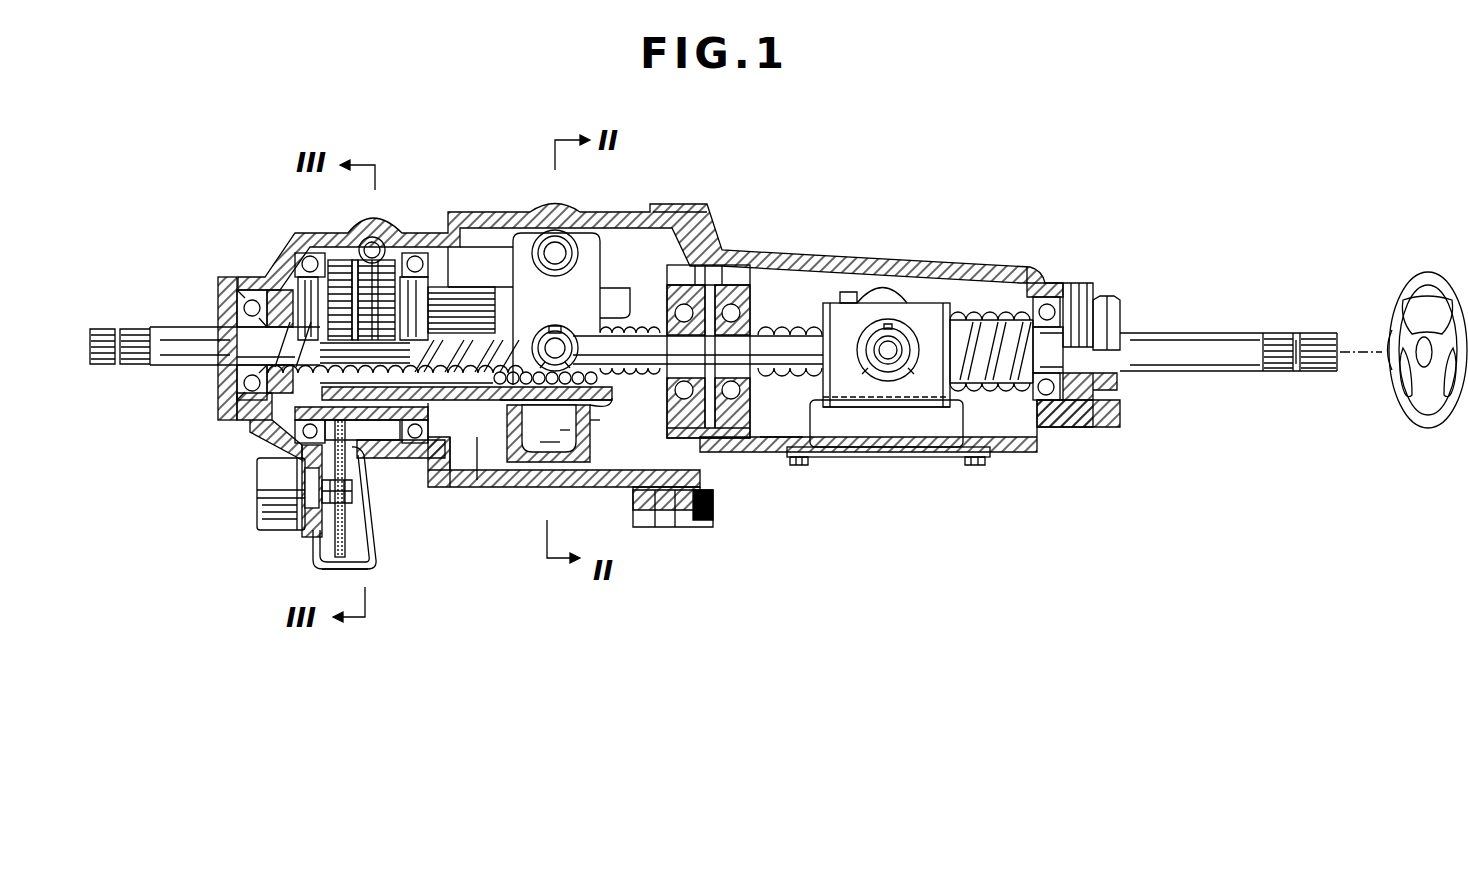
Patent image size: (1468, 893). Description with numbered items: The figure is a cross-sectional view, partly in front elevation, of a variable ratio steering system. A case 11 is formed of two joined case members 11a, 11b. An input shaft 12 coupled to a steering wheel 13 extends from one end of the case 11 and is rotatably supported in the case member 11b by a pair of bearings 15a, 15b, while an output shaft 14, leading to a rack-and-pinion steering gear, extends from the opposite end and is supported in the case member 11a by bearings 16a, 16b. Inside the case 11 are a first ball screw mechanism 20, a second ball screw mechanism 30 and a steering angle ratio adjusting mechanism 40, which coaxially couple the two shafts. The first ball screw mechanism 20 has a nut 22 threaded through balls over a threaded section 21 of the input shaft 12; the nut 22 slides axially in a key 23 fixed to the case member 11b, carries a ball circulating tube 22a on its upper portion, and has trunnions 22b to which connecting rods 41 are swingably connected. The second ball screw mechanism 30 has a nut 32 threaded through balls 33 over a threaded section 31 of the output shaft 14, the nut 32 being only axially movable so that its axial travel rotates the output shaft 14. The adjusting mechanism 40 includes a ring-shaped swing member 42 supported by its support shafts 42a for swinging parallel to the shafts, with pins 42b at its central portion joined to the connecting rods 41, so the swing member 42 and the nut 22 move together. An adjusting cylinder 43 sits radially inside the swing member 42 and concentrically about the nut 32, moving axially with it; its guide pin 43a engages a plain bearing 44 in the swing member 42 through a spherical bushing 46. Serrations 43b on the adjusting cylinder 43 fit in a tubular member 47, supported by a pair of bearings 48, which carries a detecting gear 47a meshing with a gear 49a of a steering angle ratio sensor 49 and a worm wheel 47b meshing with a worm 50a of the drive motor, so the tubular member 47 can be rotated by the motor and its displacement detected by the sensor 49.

The case 11 is at (703, 230).
The case member 11a is at (652, 204).
The case member 11b is at (1037, 277).
The input shaft 12 is at (1223, 333).
The steering wheel 13 is at (1415, 287).
The output shaft 14 is at (172, 333).
The bearing 15a is at (760, 455).
The bearing 15b is at (1067, 280).
The bearing 16a is at (233, 277).
The bearing 16b is at (700, 485).
The first ball screw mechanism 20 is at (967, 277).
The threaded section 21 is at (993, 337).
The nut 22 is at (933, 310).
The ball circulating tube 22a is at (903, 287).
The trunnions 22b is at (887, 407).
The key 23 is at (933, 440).
The second ball screw mechanism 30 is at (500, 247).
The threaded section 31 is at (470, 430).
The nut 32 is at (665, 515).
The balls 33 is at (565, 455).
The steering angle ratio adjusting mechanism 40 is at (457, 437).
The connecting rods 41 is at (837, 405).
The swing member 42 is at (583, 283).
The support shafts 42a is at (560, 243).
The pins 42b is at (551, 345).
The adjusting cylinder 43 is at (590, 460).
The guide pin 43a is at (535, 440).
The serrations 43b is at (457, 297).
The plain bearing 44 is at (595, 440).
The bushing 46 is at (520, 420).
The tubular member 47 is at (387, 457).
The detecting gear 47a is at (337, 262).
The worm wheel 47b is at (385, 260).
The bearings 48 is at (307, 253).
The steering angle ratio sensor 49 is at (273, 513).
The gear 49a is at (320, 558).
The worm 50a is at (374, 235).